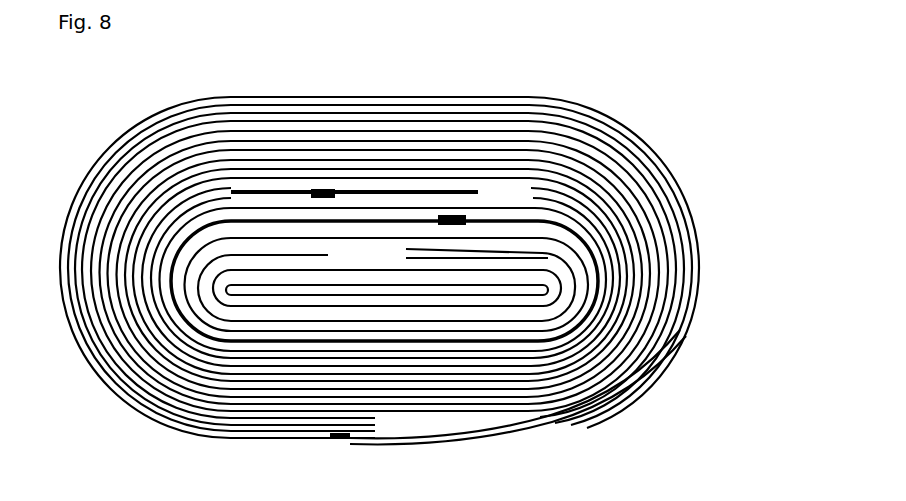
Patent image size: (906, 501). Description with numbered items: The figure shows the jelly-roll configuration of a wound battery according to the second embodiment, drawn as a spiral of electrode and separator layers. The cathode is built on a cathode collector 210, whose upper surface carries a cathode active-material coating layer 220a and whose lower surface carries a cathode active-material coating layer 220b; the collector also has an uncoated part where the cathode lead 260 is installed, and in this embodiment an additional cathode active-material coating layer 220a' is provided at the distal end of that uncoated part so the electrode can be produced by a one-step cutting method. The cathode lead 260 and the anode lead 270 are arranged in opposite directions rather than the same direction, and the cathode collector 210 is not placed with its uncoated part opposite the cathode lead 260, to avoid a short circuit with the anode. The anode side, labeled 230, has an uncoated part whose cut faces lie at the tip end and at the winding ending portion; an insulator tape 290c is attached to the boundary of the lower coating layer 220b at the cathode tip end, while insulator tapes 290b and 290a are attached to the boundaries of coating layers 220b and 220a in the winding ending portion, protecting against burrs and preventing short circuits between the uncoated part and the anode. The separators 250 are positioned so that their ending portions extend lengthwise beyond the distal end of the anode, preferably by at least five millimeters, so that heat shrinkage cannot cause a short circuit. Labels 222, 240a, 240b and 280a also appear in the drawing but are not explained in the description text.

The cathode collector 210 is at (312, 86).
The cathode active-material coating layer 220a is at (379, 224).
The cathode active-material coating layer 220a' is at (515, 408).
The cathode active-material coating layer 220b is at (378, 88).
The coil lead wire 222 is at (533, 420).
The outer winding 230 is at (698, 280).
The outer winding portion 240a is at (695, 220).
The outer winding portion 240b is at (697, 250).
The separators 250 is at (274, 434).
The cathode lead 260 is at (333, 432).
The anode lead 270 is at (458, 213).
The connecting wire 280a is at (467, 202).
The insulator tape 290a is at (147, 107).
The insulator tape 290b is at (197, 92).
The insulator tape 290c is at (505, 88).